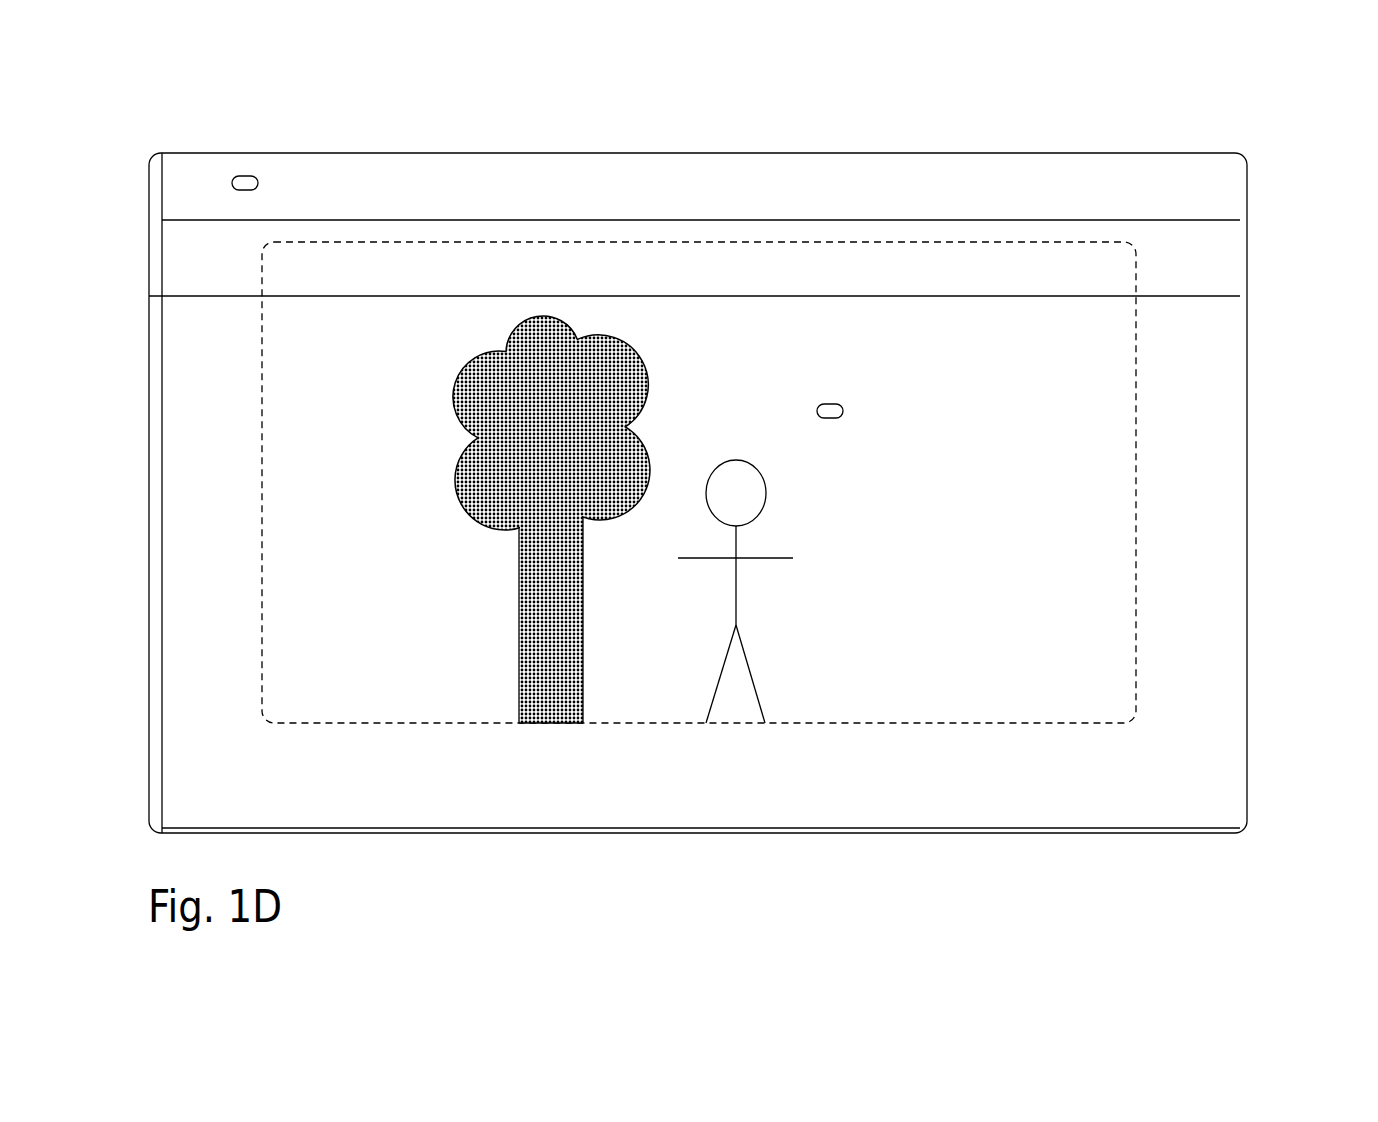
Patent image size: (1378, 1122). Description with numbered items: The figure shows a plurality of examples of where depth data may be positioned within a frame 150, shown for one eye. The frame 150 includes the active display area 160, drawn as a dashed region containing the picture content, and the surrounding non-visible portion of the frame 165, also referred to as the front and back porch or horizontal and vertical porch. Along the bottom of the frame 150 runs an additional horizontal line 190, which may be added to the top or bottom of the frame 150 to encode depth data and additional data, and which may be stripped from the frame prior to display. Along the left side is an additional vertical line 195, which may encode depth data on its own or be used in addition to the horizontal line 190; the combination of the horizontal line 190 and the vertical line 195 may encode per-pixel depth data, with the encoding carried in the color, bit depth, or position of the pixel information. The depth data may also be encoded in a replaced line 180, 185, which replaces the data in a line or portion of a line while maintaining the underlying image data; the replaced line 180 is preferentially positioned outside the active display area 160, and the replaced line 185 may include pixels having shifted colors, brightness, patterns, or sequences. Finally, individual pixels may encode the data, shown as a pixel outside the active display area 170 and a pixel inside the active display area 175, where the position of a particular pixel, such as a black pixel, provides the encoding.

The frame 150 is at (1018, 143).
The active display area 160 is at (699, 482).
The non-visible portion of the frame 165 is at (327, 785).
The pixel outside the active display area 170 is at (253, 175).
The pixel inside the active display area 175 is at (837, 400).
The replaced line 180 is at (675, 220).
The replaced line 185 is at (1136, 296).
The additional horizontal line 190 is at (862, 830).
The additional vertical line 195 is at (163, 153).